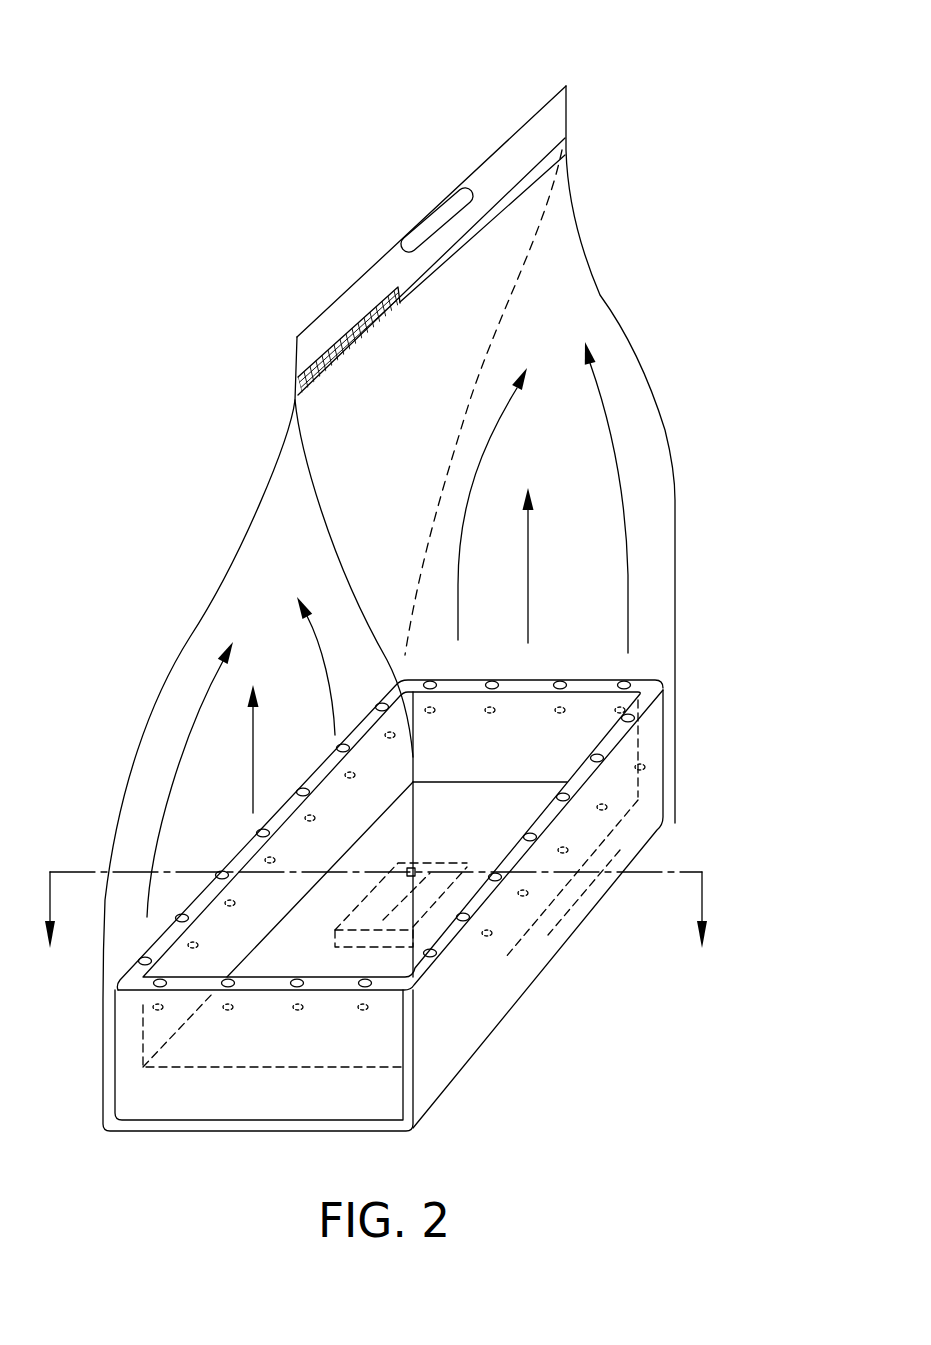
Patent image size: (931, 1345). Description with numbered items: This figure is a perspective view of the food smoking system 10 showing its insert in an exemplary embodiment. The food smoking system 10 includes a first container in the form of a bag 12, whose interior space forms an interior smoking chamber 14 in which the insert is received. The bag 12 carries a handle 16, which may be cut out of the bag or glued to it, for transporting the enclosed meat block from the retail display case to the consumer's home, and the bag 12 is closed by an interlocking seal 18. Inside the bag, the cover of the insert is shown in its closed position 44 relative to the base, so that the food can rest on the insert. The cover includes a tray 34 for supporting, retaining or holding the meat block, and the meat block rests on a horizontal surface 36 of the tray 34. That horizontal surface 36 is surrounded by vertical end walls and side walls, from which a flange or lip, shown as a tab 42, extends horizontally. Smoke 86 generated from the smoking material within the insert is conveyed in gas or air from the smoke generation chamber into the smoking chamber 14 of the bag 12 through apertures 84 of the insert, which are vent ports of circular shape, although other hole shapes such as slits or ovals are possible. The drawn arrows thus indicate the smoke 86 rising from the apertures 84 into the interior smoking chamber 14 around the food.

The food smoking system 10 is at (736, 63).
The bag 12 is at (700, 166).
The interior smoking chamber 14 is at (641, 408).
The handle 16 is at (402, 212).
The interlocking seal 18 is at (468, 257).
The tray 34 is at (534, 701).
The horizontal surface 36 is at (445, 823).
The tab 42 is at (615, 738).
The closed position 44 is at (687, 675).
The apertures 84 is at (449, 850).
The smoke 86 is at (231, 751).